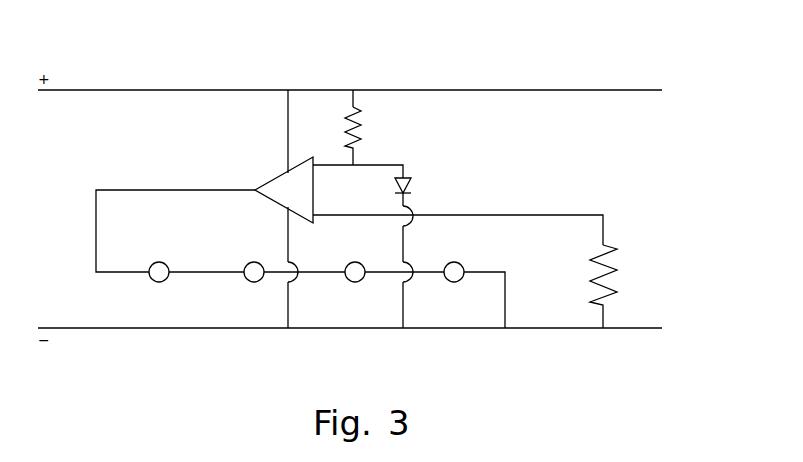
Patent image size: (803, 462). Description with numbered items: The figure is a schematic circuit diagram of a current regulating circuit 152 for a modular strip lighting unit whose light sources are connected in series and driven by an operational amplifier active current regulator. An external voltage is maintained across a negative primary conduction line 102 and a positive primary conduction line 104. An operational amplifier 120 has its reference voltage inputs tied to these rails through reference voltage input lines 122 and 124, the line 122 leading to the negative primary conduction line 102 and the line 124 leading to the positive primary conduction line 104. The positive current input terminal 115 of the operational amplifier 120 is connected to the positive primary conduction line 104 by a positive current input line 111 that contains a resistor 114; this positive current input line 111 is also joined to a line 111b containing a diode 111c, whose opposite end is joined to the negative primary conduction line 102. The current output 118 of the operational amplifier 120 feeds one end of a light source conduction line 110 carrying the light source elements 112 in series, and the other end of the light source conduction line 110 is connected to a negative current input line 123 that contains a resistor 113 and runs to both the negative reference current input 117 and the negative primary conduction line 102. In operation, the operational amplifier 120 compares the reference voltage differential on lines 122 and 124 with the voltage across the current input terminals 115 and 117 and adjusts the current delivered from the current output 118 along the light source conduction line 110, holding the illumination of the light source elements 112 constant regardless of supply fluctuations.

The current regulating circuit 152 is at (146, 56).
The positive primary conduction line 104 is at (497, 90).
The negative primary conduction line 102 is at (135, 328).
The reference voltage input line 124 is at (288, 114).
The reference voltage input line 122 is at (288, 238).
The positive current input terminal 115 is at (313, 158).
The operational amplifier 120 is at (283, 182).
The negative reference current input 117 is at (316, 219).
The current output 118 is at (253, 190).
The positive current input line 111 is at (355, 102).
The resistor 114 is at (362, 137).
The line 111b is at (382, 166).
The diode 111c is at (408, 184).
The negative current input line 123 is at (478, 215).
The resistor 113 is at (617, 263).
The light source conduction line 110 is at (198, 270).
The light source elements 112 is at (157, 283).